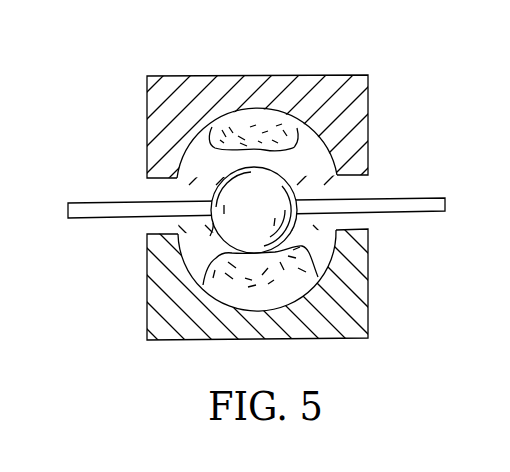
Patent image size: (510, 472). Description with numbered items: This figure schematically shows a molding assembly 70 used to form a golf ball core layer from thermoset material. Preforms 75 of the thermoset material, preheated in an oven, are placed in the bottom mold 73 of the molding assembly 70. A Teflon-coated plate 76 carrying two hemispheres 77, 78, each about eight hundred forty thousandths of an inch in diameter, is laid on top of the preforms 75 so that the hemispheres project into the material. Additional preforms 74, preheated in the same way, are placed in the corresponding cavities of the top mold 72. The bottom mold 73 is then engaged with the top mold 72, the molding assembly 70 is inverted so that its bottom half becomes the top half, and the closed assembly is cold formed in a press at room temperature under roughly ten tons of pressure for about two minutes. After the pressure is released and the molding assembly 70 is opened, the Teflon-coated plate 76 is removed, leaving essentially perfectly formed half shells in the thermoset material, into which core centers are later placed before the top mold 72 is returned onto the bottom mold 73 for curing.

The molding assembly 70 is at (106, 82).
The top mold 72 is at (354, 119).
The bottom mold 73 is at (357, 288).
The additional preforms 74 is at (250, 122).
The preforms 75 is at (273, 300).
The Teflon-coated plate 76 is at (86, 203).
The hemisphere 77 is at (216, 192).
The hemisphere 78 is at (213, 223).